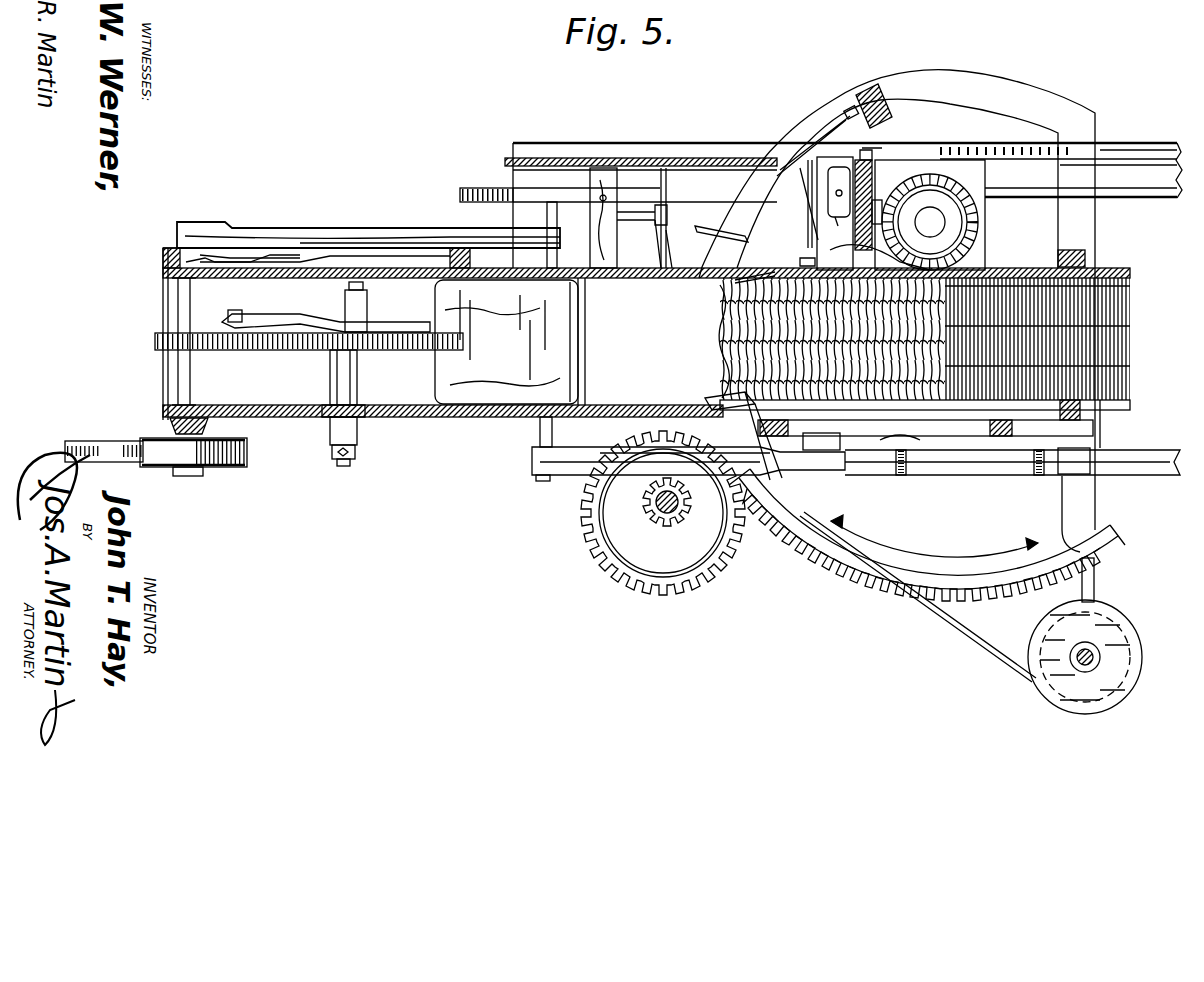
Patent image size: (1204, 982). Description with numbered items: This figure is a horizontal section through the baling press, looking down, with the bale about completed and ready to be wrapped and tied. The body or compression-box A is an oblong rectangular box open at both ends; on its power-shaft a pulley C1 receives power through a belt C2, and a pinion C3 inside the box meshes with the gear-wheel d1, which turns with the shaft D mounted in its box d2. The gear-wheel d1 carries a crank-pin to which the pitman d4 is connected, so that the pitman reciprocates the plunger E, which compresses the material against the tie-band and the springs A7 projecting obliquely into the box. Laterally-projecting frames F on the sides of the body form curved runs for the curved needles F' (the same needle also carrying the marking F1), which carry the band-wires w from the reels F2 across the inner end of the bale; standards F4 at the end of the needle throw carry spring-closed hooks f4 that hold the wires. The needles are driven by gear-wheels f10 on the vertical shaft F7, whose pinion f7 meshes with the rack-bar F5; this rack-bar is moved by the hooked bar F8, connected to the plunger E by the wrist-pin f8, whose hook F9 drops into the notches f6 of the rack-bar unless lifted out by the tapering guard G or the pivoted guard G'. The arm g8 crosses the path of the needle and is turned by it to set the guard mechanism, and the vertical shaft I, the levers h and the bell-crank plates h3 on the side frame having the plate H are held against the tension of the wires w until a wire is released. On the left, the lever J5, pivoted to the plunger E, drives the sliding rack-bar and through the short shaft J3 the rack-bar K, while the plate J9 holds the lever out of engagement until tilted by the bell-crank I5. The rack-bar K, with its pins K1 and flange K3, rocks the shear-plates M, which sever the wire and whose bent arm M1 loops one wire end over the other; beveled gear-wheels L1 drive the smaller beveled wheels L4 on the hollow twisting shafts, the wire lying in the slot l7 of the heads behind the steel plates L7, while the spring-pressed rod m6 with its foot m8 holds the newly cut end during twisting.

The body or compression-box A is at (165, 300).
The springs A7 is at (717, 280).
The cross-head or plunger E is at (506, 342).
The lever J5 is at (346, 232).
The plate J9 is at (372, 258).
The rack-bar K is at (569, 152).
The vertical wall or plate H is at (505, 160).
The pins or teeth of rack-bar K1 is at (995, 150).
The outside flange of rack-bar K3 is at (1122, 155).
The vertical shaft I is at (633, 218).
The levers h is at (715, 160).
The transverse lever-plates h3 is at (690, 212).
The short shaft J3 is at (460, 195).
The laterally-projecting frames F is at (897, 286).
The standards F4 is at (871, 90).
The spring-closed hooks f4 is at (850, 105).
The band-wires w is at (815, 130).
The shear-plates M is at (890, 165).
The spring-pressed rod m6 is at (839, 192).
The foot m8 is at (840, 218).
The arm M1 is at (808, 218).
The arm g8 is at (740, 238).
The slot l7 is at (830, 251).
The steel plates L7 is at (880, 158).
The beveled toothed wheels L4 is at (881, 198).
The beveled gear-wheels L1 is at (962, 222).
The pinion C3 is at (155, 343).
The pitman d4 is at (268, 307).
The gear-wheel d1 is at (392, 352).
The box d2 is at (330, 375).
The shaft D is at (352, 464).
The bell-crank I5 is at (305, 272).
The pulley C1 is at (240, 440).
The belt C2 is at (95, 450).
The wrist-pin f8 is at (540, 442).
The hooked bar F8 is at (576, 456).
The gear-wheels f10 is at (600, 540).
The shaft F7 is at (642, 490).
The pinion f7 is at (680, 518).
The curved needles F' is at (927, 535).
The curved needle F1 is at (838, 574).
The reels F2 is at (1125, 635).
The rack-bar F5 is at (945, 476).
The notches f6 is at (900, 478).
The under-side hook F9 is at (925, 425).
The guard G is at (900, 443).
The guard G' is at (1090, 437).